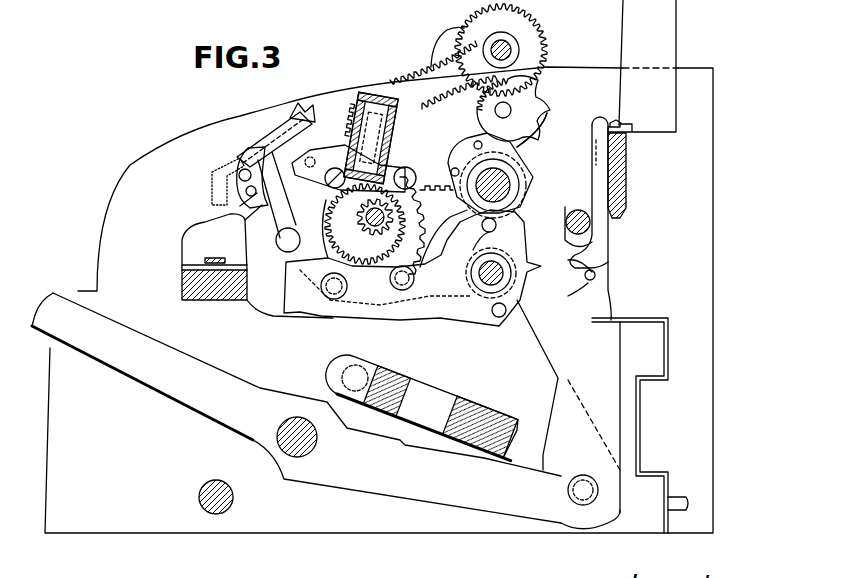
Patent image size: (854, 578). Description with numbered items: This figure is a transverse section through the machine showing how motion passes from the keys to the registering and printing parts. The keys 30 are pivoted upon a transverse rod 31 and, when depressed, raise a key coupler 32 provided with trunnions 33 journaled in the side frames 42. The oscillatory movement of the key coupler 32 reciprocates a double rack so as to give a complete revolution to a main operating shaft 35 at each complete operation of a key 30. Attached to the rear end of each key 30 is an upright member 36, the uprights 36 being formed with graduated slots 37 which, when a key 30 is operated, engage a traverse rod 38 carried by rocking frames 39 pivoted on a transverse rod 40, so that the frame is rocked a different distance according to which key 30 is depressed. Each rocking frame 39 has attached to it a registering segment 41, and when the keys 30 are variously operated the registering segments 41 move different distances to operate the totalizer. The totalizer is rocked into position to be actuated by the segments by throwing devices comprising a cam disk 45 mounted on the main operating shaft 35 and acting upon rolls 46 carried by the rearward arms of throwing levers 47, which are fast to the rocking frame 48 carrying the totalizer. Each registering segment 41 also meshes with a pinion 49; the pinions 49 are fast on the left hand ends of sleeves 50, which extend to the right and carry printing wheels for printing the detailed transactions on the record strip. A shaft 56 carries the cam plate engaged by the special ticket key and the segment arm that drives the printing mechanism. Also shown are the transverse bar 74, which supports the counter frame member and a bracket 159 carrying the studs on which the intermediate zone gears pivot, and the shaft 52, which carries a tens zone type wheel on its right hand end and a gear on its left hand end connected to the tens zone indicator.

The key 30 is at (150, 378).
The transverse rod 31 is at (295, 458).
The key coupler 32 is at (405, 388).
The trunnion 33 is at (345, 372).
The main operating shaft 35 is at (506, 281).
The upright member 36 is at (611, 357).
The graduated slot 37 is at (606, 250).
The traverse rod 38 is at (584, 210).
The rocking frame 39 is at (592, 205).
The transverse rod 40 is at (510, 173).
The registering segment 41 is at (432, 165).
The side frame 42 is at (127, 186).
The cam disk 45 is at (470, 260).
The roll 46 is at (496, 225).
The throwing lever 47 is at (474, 316).
The rocking frame 48 is at (300, 208).
The pinion 49 is at (365, 224).
The sleeve 50 is at (363, 215).
The shaft 52 is at (364, 216).
The shaft 56 is at (204, 497).
The transverse bar 74 is at (181, 284).
The bracket 159 is at (190, 236).